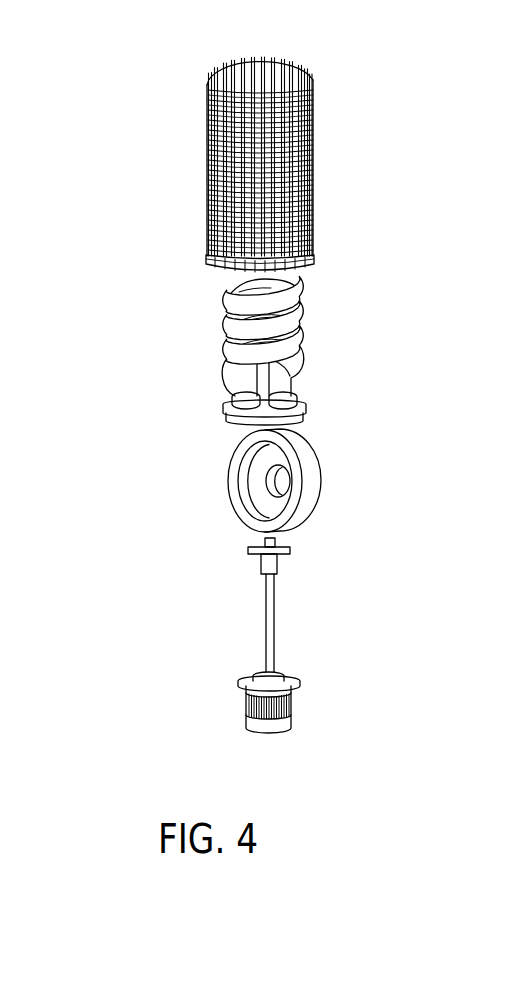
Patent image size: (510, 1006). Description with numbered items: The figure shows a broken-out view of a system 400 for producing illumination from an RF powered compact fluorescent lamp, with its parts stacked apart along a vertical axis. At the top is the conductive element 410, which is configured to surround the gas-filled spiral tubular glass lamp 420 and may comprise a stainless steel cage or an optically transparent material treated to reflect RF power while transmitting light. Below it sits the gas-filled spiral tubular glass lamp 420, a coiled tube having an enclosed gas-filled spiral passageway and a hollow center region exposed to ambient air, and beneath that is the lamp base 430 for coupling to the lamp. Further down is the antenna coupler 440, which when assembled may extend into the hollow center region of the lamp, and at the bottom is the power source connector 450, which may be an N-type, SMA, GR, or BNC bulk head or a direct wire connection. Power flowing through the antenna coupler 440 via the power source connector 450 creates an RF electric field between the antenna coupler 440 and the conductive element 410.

The system 400 is at (93, 64).
The conductive element 410 is at (297, 125).
The gas-filled spiral tubular glass lamp 420 is at (298, 300).
The lamp base 430 is at (292, 464).
The antenna coupler 440 is at (268, 608).
The power source connector 450 is at (289, 698).